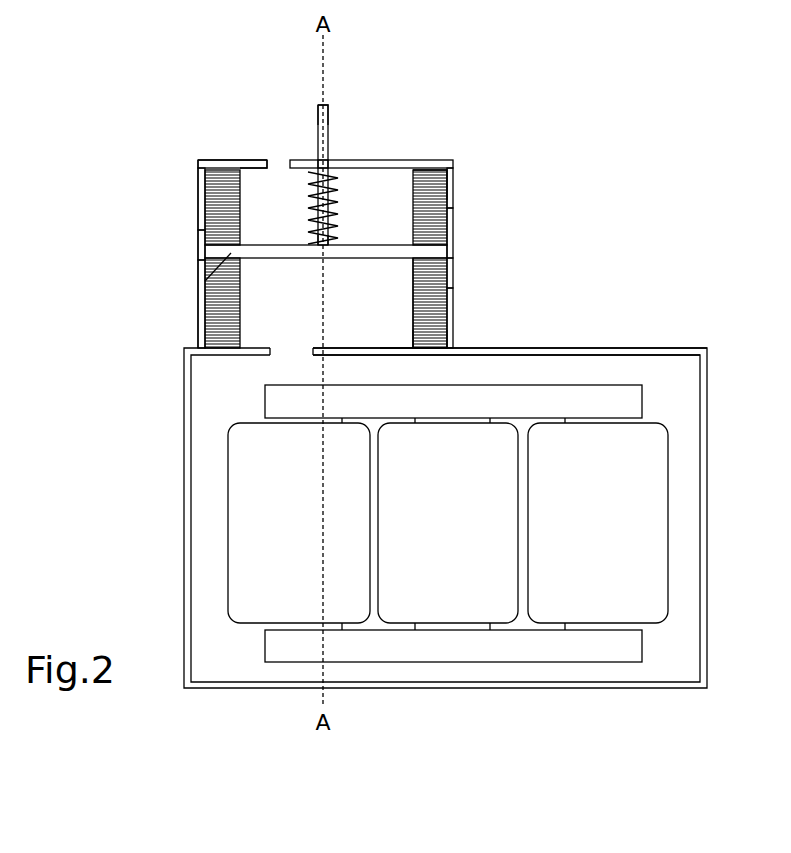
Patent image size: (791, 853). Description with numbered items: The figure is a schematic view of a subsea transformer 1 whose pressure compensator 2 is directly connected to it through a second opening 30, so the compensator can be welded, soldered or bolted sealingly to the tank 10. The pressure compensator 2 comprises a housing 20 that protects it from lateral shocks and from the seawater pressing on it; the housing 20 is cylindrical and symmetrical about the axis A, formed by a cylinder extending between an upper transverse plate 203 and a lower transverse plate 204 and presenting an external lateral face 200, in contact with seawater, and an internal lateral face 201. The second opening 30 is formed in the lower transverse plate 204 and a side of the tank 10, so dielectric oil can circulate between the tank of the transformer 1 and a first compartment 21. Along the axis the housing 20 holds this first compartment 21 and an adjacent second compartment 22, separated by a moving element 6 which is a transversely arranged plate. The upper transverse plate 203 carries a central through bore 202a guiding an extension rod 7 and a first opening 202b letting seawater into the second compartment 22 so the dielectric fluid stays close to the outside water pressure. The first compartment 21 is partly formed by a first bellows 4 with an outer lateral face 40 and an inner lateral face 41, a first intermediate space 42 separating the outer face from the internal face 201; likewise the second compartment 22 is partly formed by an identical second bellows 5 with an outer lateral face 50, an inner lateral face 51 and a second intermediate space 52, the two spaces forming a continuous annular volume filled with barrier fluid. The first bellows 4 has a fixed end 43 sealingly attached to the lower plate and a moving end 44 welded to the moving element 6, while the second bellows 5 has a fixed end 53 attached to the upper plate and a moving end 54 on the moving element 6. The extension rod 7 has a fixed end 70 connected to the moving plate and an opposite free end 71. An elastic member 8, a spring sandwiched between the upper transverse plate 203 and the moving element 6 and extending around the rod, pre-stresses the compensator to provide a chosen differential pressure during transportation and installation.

The transformer 1 is at (698, 332).
The tank 10 is at (707, 412).
The pressure compensator 2 is at (180, 140).
The housing 20 is at (199, 238).
The external lateral face 200 is at (193, 318).
The internal lateral face 201 is at (220, 158).
The central through bore 202a is at (331, 158).
The first opening 202b is at (264, 158).
The upper transverse plate 203 is at (406, 161).
The lower transverse plate 204 is at (384, 356).
The first compartment 21 is at (394, 309).
The second compartment 22 is at (386, 203).
The second opening 30 is at (286, 352).
The first bellows 4 is at (448, 272).
The outer lateral face 40 is at (454, 313).
The inner lateral face 41 is at (408, 279).
The first intermediate space 42 is at (454, 336).
The fixed end 43 is at (398, 343).
The moving end 44 is at (243, 268).
The second bellows 5 is at (450, 210).
The outer lateral face 50 is at (446, 183).
The inner lateral face 51 is at (241, 203).
The second intermediate space 52 is at (196, 215).
The fixed end 53 is at (237, 197).
The moving end 54 is at (412, 238).
The moving element 6 is at (200, 274).
The extension rod 7 is at (331, 118).
The fixed end 70 is at (329, 249).
The free end 71 is at (316, 128).
The elastic member 8 is at (334, 196).